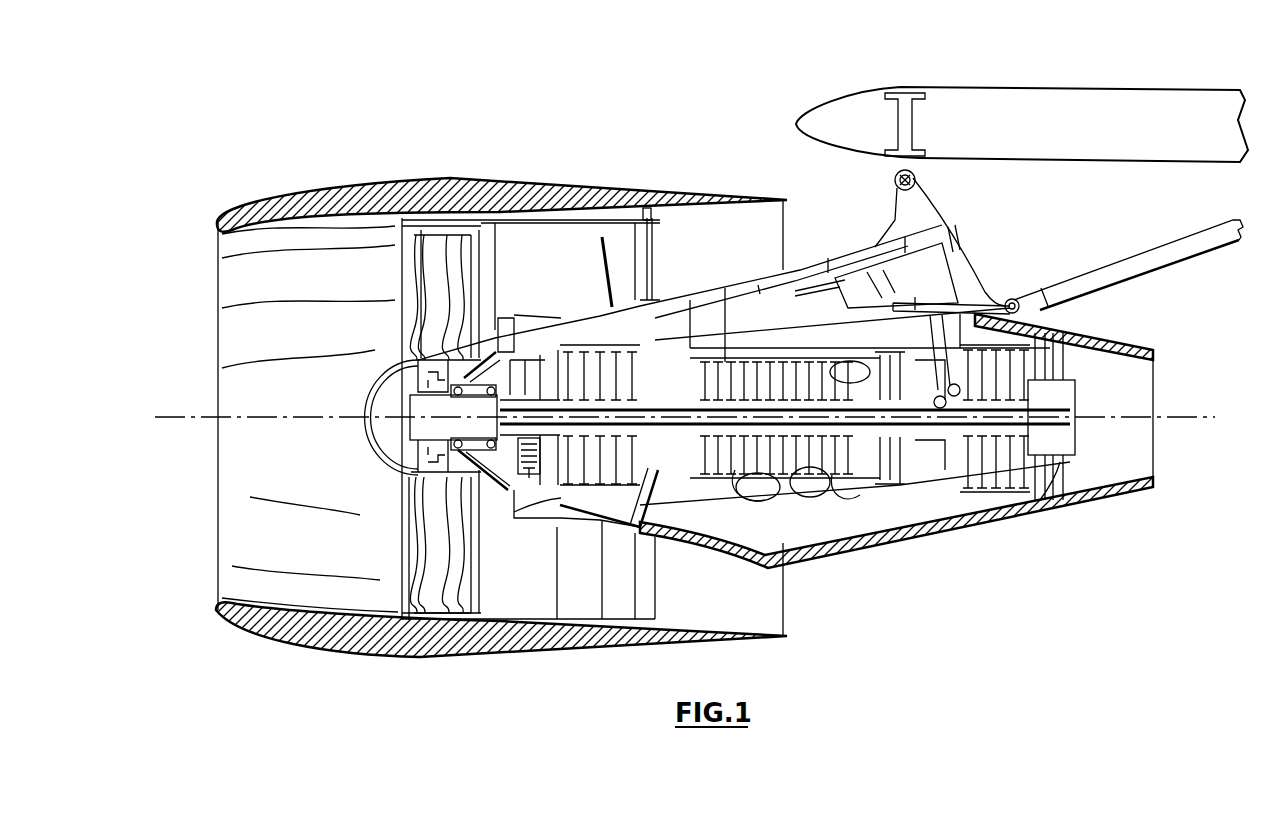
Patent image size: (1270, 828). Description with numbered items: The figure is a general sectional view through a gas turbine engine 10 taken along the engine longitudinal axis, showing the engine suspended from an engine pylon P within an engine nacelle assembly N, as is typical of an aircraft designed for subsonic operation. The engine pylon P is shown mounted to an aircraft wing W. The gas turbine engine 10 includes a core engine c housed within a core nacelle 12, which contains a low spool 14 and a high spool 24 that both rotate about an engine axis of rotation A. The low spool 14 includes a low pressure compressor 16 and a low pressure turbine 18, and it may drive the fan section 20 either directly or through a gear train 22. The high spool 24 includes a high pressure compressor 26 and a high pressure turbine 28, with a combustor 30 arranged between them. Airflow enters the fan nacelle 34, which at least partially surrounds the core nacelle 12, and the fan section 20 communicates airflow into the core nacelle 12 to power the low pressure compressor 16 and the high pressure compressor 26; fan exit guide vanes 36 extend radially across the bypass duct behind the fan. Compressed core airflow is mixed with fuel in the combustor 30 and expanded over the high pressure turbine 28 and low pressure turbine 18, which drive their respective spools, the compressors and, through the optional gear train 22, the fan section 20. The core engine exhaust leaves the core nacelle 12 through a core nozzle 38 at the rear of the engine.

The gas turbine engine 10 is at (448, 123).
The core nacelle 12 is at (950, 536).
The low spool 14 is at (651, 437).
The low pressure compressor 16 is at (598, 320).
The low pressure turbine 18 is at (1002, 347).
The fan section 20 is at (439, 246).
The gear train 22 is at (525, 436).
The high spool 24 is at (870, 450).
The high pressure compressor 26 is at (772, 372).
The high pressure turbine 28 is at (926, 510).
The combustor 30 is at (832, 380).
The fan nacelle 34 is at (283, 628).
The fan exit guide vanes 36 is at (622, 596).
The core nozzle 38 is at (1140, 390).
The engine nacelle assembly N is at (647, 178).
The engine pylon P is at (982, 210).
The aircraft wing W is at (1091, 122).
The engine axis of rotation A is at (1203, 420).
The core engine c is at (865, 565).